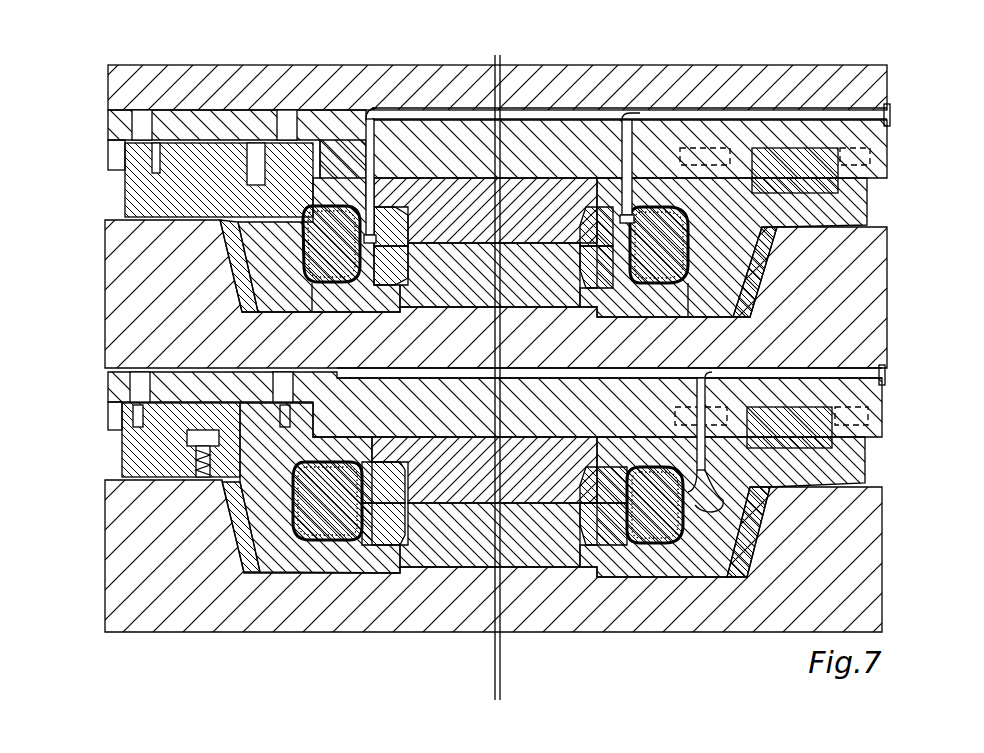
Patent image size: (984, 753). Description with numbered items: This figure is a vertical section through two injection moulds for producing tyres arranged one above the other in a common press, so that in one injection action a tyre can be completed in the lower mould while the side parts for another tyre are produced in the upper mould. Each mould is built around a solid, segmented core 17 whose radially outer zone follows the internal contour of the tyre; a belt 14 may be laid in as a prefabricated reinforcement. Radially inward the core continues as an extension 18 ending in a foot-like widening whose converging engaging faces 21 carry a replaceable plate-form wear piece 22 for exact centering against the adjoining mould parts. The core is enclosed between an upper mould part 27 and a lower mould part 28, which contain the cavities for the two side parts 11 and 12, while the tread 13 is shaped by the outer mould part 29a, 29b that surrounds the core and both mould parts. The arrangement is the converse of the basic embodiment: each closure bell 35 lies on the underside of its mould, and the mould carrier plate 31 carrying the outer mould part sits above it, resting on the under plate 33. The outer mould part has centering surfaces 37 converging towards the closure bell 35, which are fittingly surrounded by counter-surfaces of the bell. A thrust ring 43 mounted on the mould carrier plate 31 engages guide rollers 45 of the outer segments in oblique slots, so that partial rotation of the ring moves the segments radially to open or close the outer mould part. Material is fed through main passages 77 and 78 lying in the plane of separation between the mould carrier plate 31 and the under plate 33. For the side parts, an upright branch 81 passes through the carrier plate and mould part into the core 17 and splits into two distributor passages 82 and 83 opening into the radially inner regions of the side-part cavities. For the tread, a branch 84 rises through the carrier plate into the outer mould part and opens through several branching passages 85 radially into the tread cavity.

The side part 11 is at (312, 212).
The side part 12 is at (312, 287).
The tread 13 is at (300, 477).
The belt 14 is at (303, 232).
The core 17 is at (663, 273).
The extension 18 is at (591, 514).
The engaging face 21 is at (405, 270).
The wear piece 22 is at (406, 227).
The upper mould part 27 is at (466, 269).
The lower mould part 28 is at (516, 201).
The outer mould part 29a is at (245, 300).
The lower wedge 29b is at (283, 560).
The mould carrier plate 31 is at (318, 112).
The under plate 33 is at (240, 75).
The closure bell 35 is at (873, 292).
The centering surface 37 is at (765, 275).
The thrust ring 43 is at (889, 95).
The guide roller 45 is at (187, 440).
The main passage 77 is at (762, 113).
The main passage 78 is at (882, 370).
The branch 81 is at (390, 108).
The distributor passage 82 is at (368, 228).
The distributor passage 83 is at (627, 255).
The branch 84 is at (722, 388).
The branching passage 85 is at (697, 515).